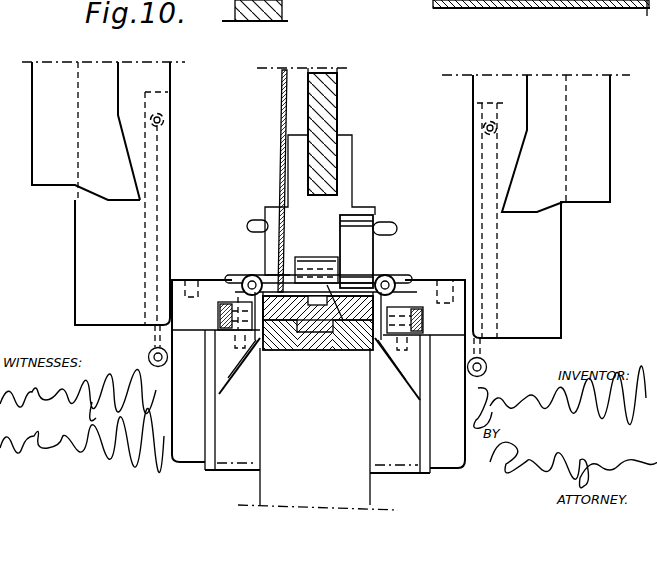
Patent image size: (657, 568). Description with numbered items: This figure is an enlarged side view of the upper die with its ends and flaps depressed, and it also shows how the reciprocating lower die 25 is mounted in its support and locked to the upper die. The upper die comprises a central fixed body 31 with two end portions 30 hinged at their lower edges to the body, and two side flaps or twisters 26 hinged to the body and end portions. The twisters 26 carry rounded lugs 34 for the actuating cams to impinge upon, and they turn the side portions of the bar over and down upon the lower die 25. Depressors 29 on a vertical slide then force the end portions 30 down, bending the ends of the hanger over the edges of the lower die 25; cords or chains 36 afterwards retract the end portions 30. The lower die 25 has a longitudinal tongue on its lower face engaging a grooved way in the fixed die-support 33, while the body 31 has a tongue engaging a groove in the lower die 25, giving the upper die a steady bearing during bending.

The lower die 25 is at (318, 303).
The twisters 26 is at (340, 352).
The depressors 29 is at (326, 200).
The end portions of the die 30 is at (318, 374).
The body of the upper die 31 is at (322, 205).
The die-support 33 is at (436, 255).
The rounded lugs 34 is at (356, 251).
The cords or chains 36 is at (150, 341).